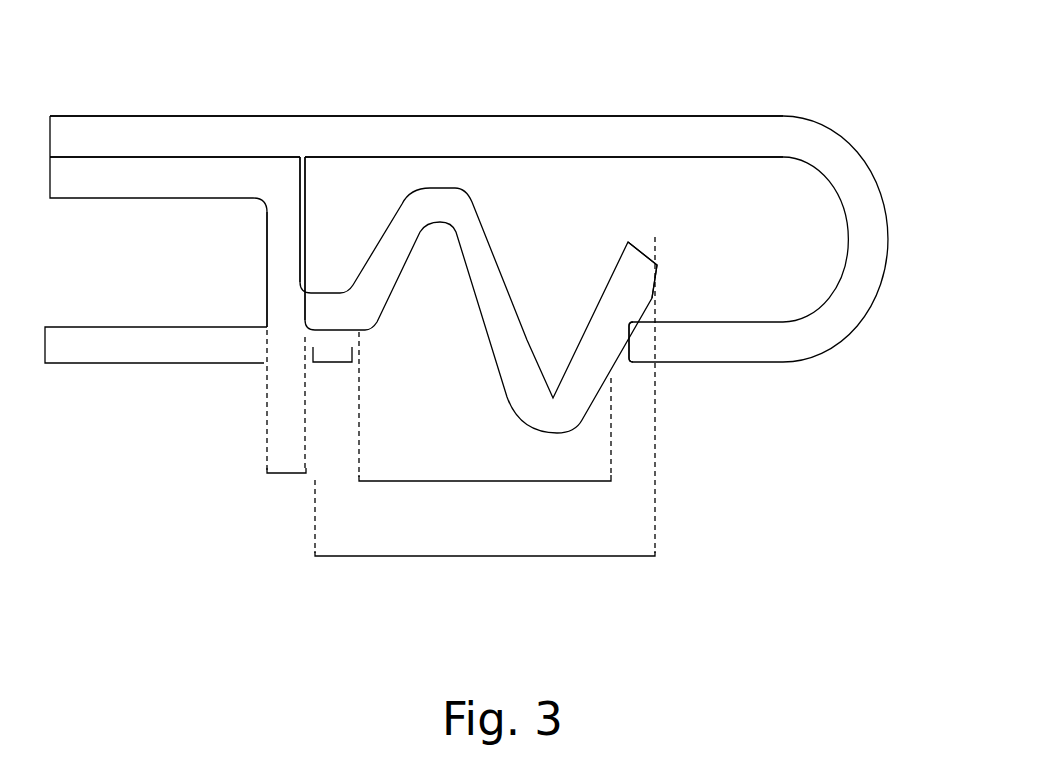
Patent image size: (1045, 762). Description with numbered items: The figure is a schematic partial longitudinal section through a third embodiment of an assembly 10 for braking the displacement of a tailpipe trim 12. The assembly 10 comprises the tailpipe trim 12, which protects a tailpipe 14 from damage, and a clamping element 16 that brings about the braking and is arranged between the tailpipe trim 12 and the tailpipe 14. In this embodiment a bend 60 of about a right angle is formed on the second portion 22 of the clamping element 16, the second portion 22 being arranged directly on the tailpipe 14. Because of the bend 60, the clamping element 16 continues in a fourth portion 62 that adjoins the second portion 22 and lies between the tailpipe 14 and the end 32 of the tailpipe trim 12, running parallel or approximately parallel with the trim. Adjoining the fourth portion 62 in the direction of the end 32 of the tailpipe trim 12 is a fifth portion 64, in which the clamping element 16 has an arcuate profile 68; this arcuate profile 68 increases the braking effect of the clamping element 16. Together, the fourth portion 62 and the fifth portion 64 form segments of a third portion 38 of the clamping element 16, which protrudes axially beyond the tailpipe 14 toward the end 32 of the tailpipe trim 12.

The assembly 10 is at (490, 187).
The tailpipe trim 12 is at (348, 130).
The tailpipe 14 is at (125, 350).
The clamping element 16 is at (280, 248).
The second portion 22 is at (287, 473).
The end 32 is at (655, 303).
The third portion 38 is at (485, 556).
The bend 60 is at (278, 310).
The fourth portion 62 is at (333, 362).
The fifth portion 64 is at (485, 481).
The arcuate profile 68 is at (443, 190).